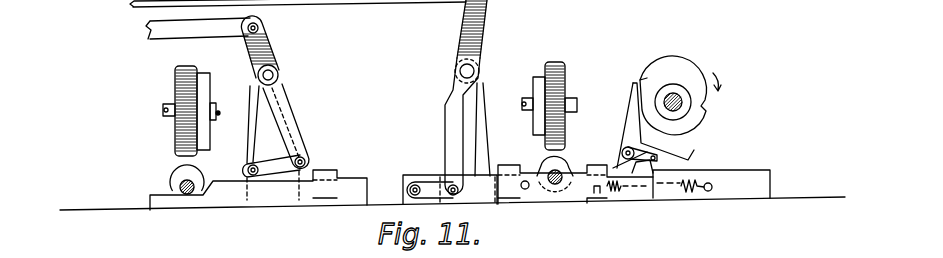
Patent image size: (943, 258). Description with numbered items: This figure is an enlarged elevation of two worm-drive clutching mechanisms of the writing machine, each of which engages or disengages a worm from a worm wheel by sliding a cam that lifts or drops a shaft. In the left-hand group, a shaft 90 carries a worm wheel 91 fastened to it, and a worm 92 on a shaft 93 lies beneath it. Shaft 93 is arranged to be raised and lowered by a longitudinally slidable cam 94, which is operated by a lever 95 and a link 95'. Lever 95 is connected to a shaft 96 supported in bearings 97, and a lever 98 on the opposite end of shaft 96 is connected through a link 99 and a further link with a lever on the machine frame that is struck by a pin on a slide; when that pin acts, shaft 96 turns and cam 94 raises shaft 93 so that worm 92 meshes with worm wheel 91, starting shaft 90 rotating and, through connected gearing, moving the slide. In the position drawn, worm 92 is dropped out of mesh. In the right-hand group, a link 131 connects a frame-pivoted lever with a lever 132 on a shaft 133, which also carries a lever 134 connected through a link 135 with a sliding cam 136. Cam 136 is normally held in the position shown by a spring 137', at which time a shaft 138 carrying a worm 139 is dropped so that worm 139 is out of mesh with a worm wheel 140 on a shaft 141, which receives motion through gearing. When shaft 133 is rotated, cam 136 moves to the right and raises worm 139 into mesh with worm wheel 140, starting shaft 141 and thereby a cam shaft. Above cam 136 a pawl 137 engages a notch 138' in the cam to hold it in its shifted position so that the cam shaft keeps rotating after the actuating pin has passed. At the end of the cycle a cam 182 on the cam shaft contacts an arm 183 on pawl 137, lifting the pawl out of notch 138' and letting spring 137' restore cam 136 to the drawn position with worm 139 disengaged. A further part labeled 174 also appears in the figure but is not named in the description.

The shaft 90 is at (210, 104).
The worm wheel 91 is at (177, 80).
The worm 92 is at (170, 178).
The shaft 93 is at (186, 194).
The cam 94 is at (224, 197).
The lever 95 is at (304, 126).
The link 95' is at (252, 143).
The shaft 96 is at (279, 75).
The bearings 97 is at (232, 105).
The lever 98 is at (265, 30).
The link 99 is at (148, 37).
The link 131 is at (367, 1).
The lever 132 is at (488, 20).
The shaft 133 is at (478, 69).
The lever 134 is at (455, 124).
The link 135 is at (432, 156).
The sliding cam 136 is at (538, 198).
The pawl 137 is at (679, 127).
The spring 137' is at (711, 202).
The shaft 138 is at (532, 161).
The notch 138' is at (632, 201).
The worm 139 is at (560, 168).
The worm wheel 140 is at (567, 78).
The shaft 141 is at (576, 106).
The shaft 174 is at (676, 99).
The cam 182 is at (712, 110).
The arm 183 is at (643, 81).